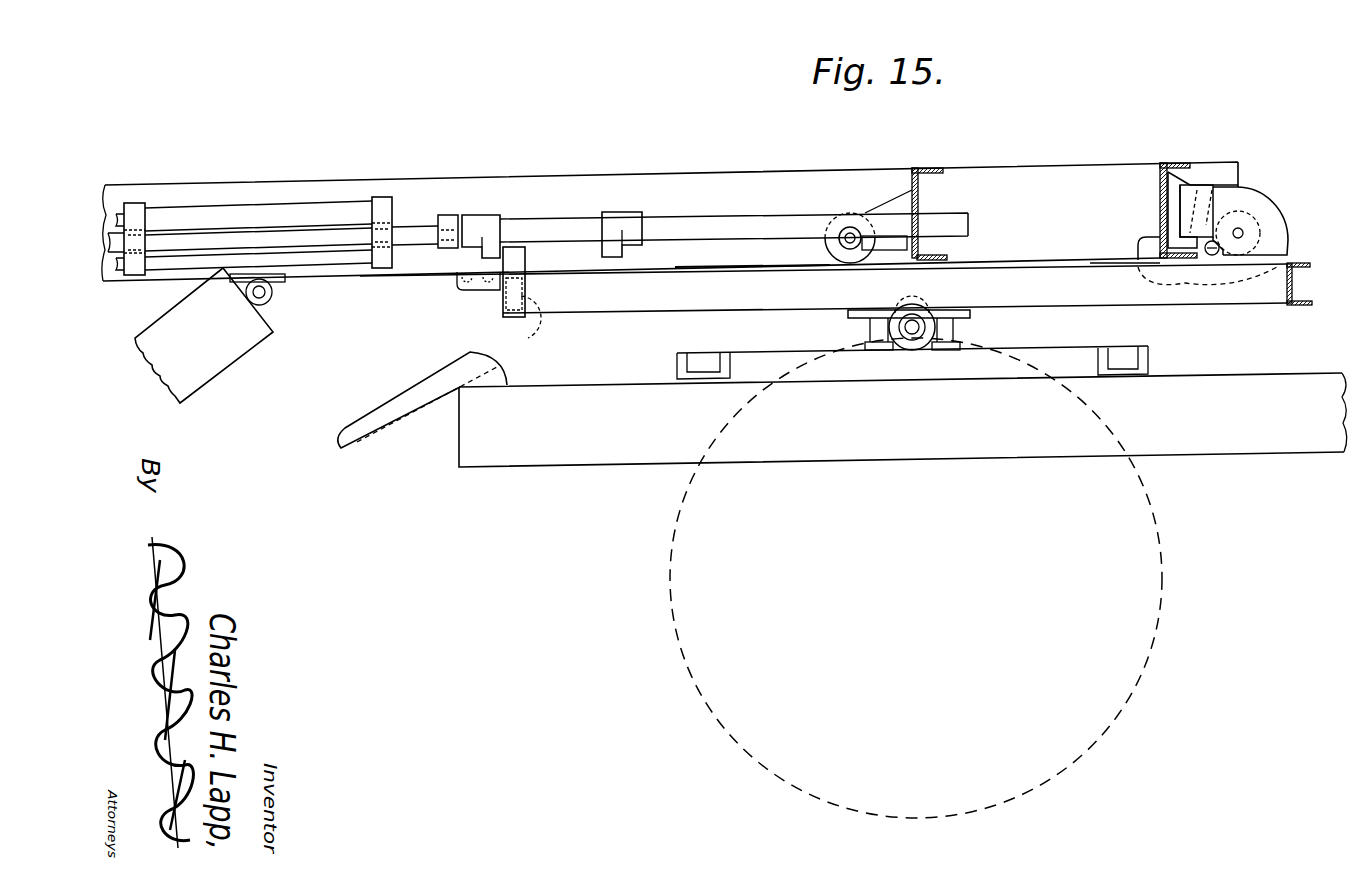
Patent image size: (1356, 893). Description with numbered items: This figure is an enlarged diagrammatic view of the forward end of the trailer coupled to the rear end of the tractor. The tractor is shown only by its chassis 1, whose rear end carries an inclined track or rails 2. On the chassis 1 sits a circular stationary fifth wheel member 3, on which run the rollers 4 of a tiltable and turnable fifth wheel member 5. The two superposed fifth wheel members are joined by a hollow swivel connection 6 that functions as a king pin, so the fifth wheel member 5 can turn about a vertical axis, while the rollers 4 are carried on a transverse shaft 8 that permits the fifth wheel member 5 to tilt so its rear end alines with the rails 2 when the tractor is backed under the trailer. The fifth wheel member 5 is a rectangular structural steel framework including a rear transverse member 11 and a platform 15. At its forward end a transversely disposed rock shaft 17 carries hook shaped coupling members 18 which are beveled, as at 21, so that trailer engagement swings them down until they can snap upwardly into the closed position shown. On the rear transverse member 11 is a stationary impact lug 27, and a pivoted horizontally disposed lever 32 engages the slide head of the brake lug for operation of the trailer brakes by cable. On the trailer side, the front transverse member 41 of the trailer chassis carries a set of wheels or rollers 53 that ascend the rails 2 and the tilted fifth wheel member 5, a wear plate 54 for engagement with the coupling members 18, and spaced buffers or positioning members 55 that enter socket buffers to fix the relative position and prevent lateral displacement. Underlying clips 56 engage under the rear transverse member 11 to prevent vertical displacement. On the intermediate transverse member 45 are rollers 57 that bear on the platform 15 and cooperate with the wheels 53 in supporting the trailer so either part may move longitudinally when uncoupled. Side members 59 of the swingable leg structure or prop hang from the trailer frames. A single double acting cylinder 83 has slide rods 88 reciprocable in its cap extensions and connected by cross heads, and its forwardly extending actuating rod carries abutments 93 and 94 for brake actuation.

The chassis 1 is at (545, 467).
The inclined track or rails 2 is at (360, 440).
The circular stationary fifth wheel member 3 is at (740, 353).
The rollers 4 is at (932, 330).
The tiltable and turnable fifth wheel member 5 is at (628, 312).
The swivel connection 6 is at (945, 327).
The transverse shaft 8 is at (912, 330).
The rear transverse member 11 is at (530, 325).
The platform 15 is at (710, 267).
The rock shaft 17 is at (1213, 256).
The coupling members 18 is at (1168, 284).
The beveled edges 21 is at (1142, 242).
The stationary impact lug 27 is at (518, 253).
The lever 32 is at (1190, 180).
The front transverse member 41 is at (1162, 172).
The intermediate transverse member 45 is at (912, 180).
The wheels or rollers 53 is at (1275, 208).
The wear plate 54 is at (1160, 232).
The buffers or positioning members 55 is at (1172, 205).
The underlying clips 56 is at (478, 284).
The wheels or rollers 57 is at (825, 240).
The side members 59 is at (218, 362).
The cylinder 83 is at (316, 208).
The slide rods 88 is at (248, 238).
The abutment 93 is at (475, 222).
The abutment 94 is at (613, 222).